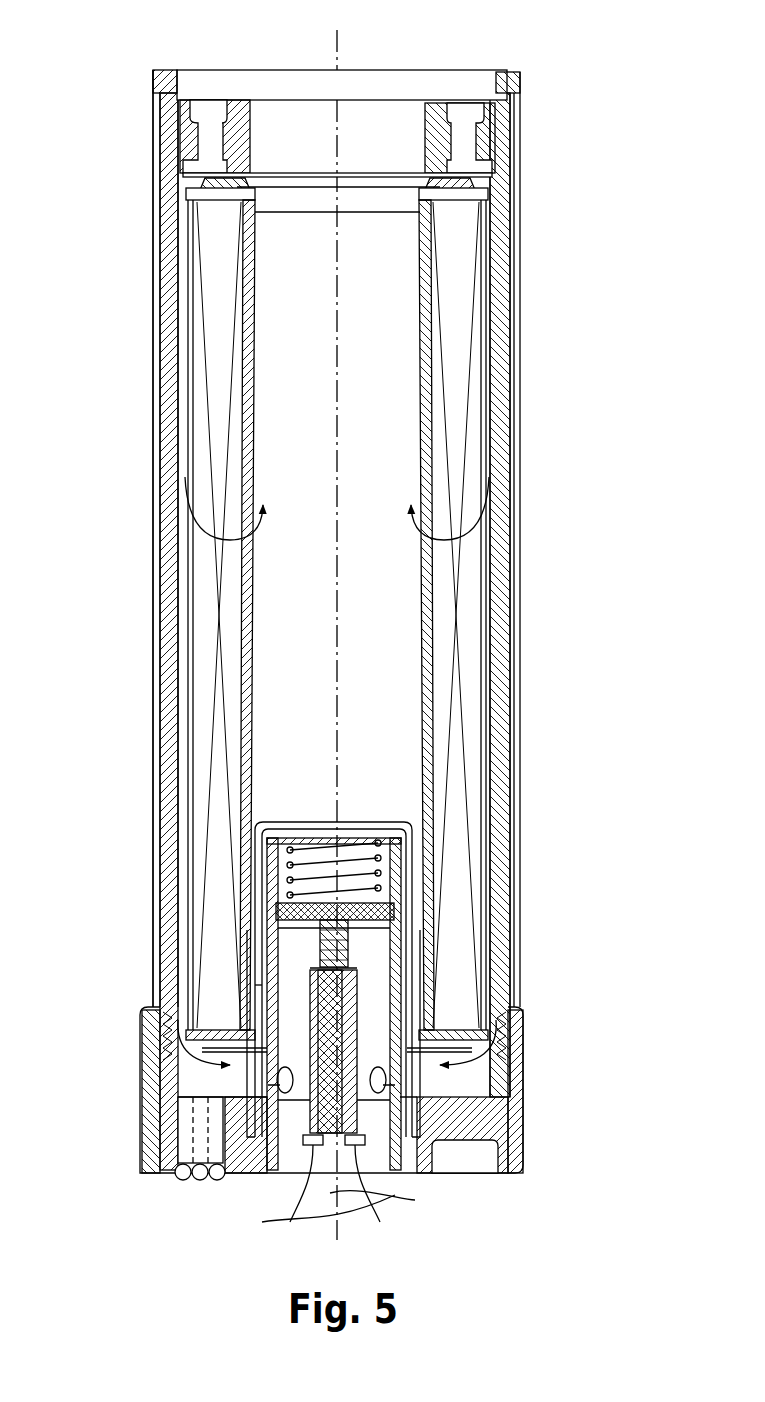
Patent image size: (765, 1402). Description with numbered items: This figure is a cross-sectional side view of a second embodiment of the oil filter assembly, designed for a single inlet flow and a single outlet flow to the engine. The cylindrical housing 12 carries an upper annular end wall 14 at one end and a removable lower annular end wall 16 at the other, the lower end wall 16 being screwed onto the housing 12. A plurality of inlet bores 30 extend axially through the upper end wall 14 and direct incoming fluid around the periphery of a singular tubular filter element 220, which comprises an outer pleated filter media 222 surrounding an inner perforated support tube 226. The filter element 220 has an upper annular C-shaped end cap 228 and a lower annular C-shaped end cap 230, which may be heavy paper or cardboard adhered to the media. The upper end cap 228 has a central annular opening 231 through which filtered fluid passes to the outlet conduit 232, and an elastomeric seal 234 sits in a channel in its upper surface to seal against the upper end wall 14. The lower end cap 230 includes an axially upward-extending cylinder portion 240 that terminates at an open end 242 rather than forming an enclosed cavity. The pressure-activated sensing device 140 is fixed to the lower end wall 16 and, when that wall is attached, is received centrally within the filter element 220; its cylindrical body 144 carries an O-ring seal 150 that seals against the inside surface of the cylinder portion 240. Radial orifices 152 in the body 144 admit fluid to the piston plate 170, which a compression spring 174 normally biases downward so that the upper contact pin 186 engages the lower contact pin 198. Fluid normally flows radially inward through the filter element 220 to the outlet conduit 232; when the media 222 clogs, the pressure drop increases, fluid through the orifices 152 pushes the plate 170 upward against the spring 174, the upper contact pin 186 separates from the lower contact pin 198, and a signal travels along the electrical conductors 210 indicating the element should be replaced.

The cylindrical housing 12 is at (165, 486).
The upper annular end wall 14 is at (440, 103).
The lower annular end wall 16 is at (525, 1092).
The inlet bores 30 is at (207, 142).
The pressure-activated sensing device 140 is at (408, 885).
The cylindrical body 144 is at (270, 858).
The O-ring seal 150 is at (393, 1022).
The radial orifices 152 is at (385, 1090).
The piston plate 170 is at (305, 920).
The compression spring 174 is at (307, 858).
The upper contact pin 186 is at (335, 1000).
The lower contact pin 198 is at (325, 1138).
The electrical conductors 210 is at (378, 1190).
The tubular filter element 220 is at (495, 588).
The pleated filter media 222 is at (470, 655).
The inner perforated support tube 226 is at (415, 397).
The upper end cap 228 is at (485, 203).
The lower end cap 230 is at (205, 1032).
The central annular opening 231 is at (255, 203).
The outlet conduit 232 is at (283, 120).
The elastomeric seal 234 is at (462, 180).
The cylinder portion 240 is at (262, 985).
The open end 242 is at (420, 930).